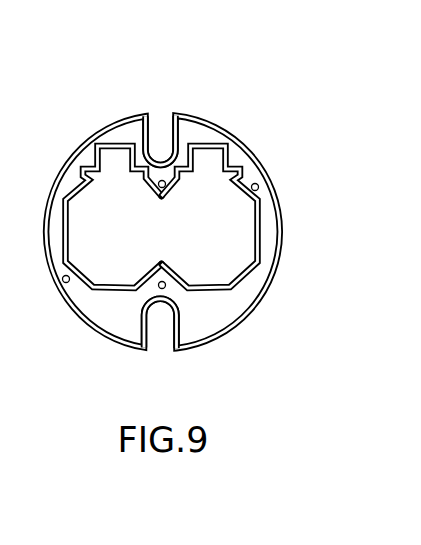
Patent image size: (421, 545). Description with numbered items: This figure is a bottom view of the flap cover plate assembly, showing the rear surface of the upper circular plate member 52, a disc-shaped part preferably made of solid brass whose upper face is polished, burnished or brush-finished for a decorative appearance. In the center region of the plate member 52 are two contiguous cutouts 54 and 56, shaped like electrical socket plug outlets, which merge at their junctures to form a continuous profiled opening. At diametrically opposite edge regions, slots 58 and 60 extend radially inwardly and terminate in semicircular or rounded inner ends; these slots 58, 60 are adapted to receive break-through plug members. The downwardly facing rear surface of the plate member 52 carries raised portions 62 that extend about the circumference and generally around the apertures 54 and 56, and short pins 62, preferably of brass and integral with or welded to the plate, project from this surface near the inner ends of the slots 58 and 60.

The upper circular plate member 52 is at (241, 324).
The cutout 54 is at (108, 242).
The cutout 56 is at (195, 242).
The slot 58 is at (161, 137).
The slot 60 is at (162, 340).
The raised portions and pins 62 is at (166, 181).